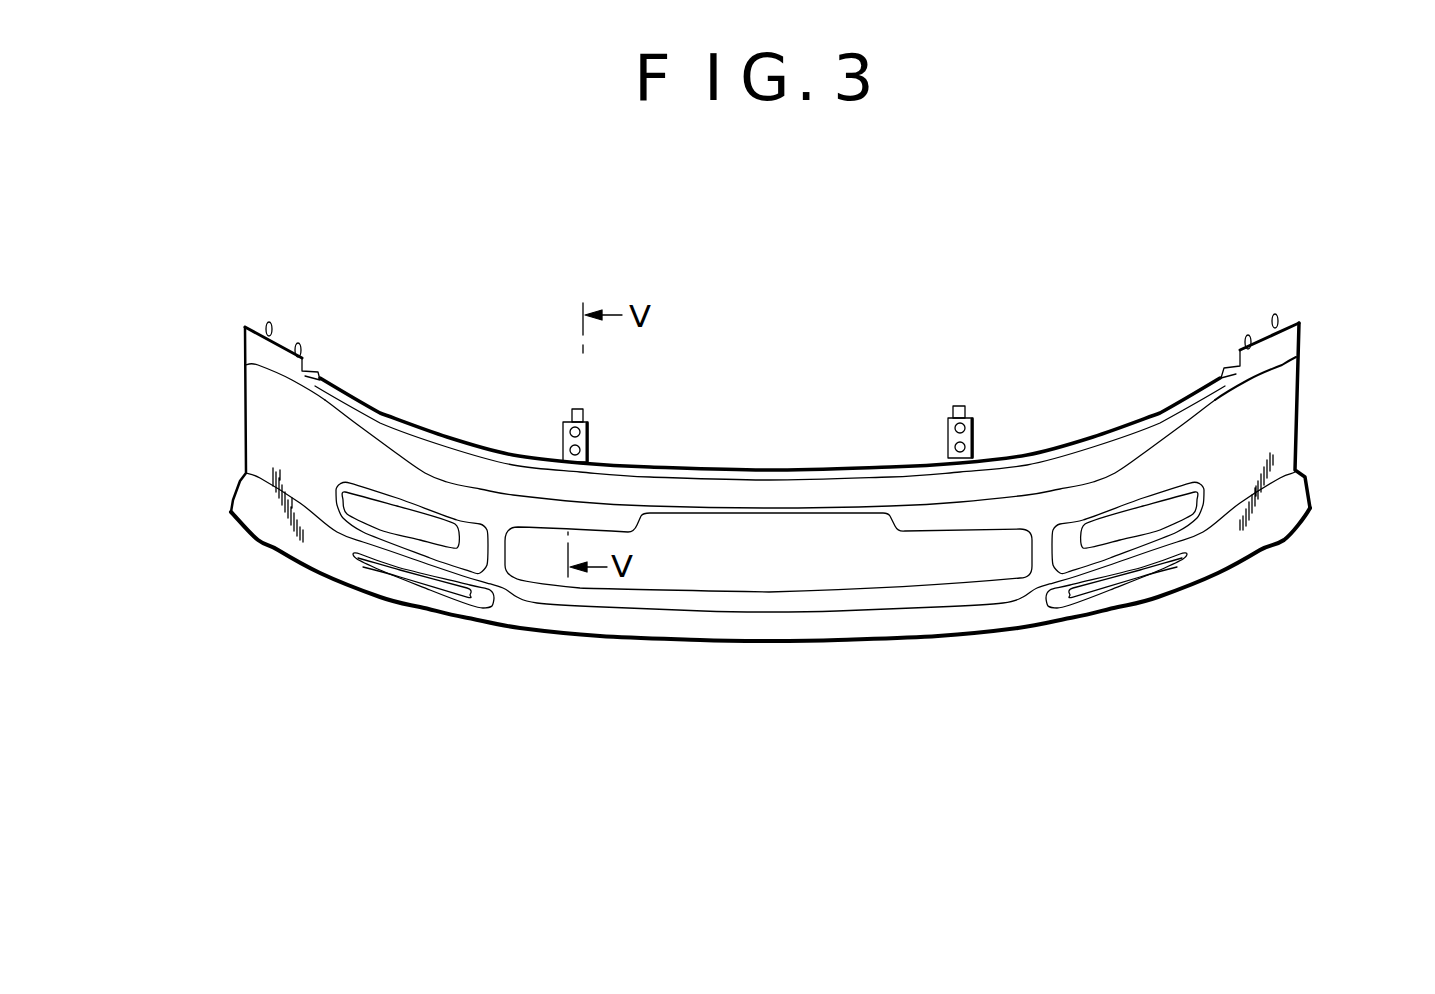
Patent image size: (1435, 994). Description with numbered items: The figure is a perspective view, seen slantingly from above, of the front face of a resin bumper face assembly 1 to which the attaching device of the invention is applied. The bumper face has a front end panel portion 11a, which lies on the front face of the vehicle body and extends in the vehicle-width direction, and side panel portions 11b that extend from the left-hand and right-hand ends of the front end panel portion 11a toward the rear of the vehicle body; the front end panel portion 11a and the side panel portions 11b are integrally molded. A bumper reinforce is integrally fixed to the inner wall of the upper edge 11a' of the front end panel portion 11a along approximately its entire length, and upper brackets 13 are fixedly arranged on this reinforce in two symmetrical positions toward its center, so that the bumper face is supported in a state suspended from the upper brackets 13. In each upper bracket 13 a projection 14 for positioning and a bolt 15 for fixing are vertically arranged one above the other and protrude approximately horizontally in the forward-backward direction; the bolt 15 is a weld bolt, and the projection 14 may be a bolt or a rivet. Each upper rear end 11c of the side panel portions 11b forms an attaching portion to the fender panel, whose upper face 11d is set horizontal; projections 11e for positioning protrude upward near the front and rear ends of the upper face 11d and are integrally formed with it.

The bumper 1 is at (767, 646).
The front end panel portion 11a is at (770, 469).
The upper edge 11a' is at (770, 396).
The side panel portions 11b is at (283, 443).
The upper rear ends (attaching portions) 11c is at (256, 350).
The upper face 11d is at (275, 340).
The projections for positioning 11e is at (268, 318).
The upper brackets 13 is at (589, 437).
The projection for positioning 14 is at (563, 447).
The bolt for fixing 15 is at (572, 415).